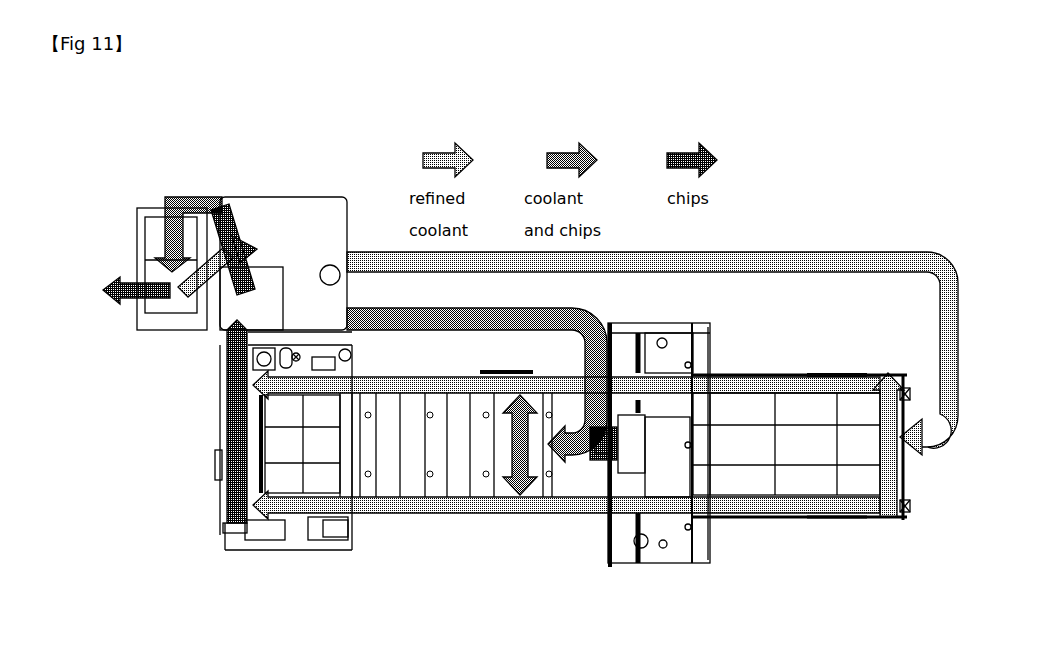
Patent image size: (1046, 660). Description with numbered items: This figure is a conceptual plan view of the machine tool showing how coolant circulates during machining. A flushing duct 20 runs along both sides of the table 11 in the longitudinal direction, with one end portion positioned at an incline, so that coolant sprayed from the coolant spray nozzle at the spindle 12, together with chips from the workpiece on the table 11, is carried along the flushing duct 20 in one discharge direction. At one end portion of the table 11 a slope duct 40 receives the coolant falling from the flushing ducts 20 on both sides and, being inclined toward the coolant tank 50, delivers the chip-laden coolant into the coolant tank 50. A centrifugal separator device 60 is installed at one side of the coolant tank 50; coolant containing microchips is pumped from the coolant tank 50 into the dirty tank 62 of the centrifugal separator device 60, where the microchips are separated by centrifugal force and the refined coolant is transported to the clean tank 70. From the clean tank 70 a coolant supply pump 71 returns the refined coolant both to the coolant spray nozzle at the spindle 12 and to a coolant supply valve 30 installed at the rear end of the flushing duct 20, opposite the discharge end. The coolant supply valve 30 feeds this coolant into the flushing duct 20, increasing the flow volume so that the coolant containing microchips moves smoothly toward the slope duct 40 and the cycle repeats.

The table 11 is at (463, 482).
The spindle 12 is at (588, 470).
The flushing duct 20 is at (412, 375).
The coolant supply valve 30 is at (908, 392).
The slope duct 40 is at (237, 433).
The coolant tank 50 is at (237, 310).
The centrifugal separator device 60 is at (123, 328).
The dirty tank 62 is at (170, 310).
The clean tank 70 is at (272, 218).
The coolant supply pump 71 is at (342, 262).